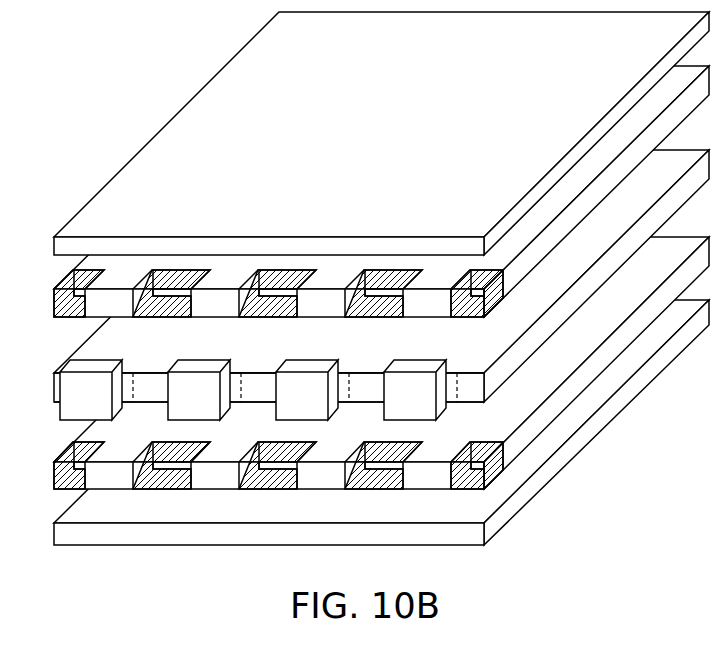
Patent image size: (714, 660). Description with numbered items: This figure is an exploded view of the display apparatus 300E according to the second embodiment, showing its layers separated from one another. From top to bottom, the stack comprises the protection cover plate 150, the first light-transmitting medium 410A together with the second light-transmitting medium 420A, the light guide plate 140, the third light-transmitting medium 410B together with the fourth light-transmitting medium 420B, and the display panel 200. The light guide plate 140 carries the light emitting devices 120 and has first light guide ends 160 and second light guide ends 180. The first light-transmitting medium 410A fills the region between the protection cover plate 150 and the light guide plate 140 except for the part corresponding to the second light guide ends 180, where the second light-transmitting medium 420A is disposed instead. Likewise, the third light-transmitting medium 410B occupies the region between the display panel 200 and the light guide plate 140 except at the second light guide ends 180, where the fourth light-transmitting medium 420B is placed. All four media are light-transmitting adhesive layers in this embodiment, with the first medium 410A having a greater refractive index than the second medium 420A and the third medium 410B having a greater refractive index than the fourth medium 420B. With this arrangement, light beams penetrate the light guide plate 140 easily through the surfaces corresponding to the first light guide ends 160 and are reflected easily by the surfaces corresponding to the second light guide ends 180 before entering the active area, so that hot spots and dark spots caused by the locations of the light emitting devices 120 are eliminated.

The protection cover plate 150 is at (548, 178).
The first light-transmitting medium 410A is at (368, 251).
The light guide plate 140 is at (368, 362).
The third light-transmitting medium 410B is at (367, 369).
The display panel 200 is at (548, 468).
The light emitting device 120 is at (420, 389).
The first light guide ends 160 is at (126, 399).
The second light guide ends 180 is at (56, 396).
The second light-transmitting medium 420A is at (450, 337).
The fourth light-transmitting medium 420B is at (455, 429).
The display apparatus 300E is at (367, 305).